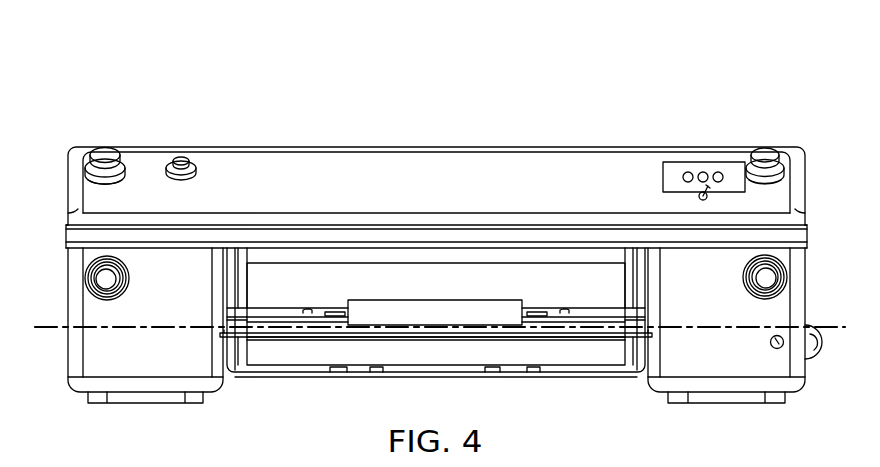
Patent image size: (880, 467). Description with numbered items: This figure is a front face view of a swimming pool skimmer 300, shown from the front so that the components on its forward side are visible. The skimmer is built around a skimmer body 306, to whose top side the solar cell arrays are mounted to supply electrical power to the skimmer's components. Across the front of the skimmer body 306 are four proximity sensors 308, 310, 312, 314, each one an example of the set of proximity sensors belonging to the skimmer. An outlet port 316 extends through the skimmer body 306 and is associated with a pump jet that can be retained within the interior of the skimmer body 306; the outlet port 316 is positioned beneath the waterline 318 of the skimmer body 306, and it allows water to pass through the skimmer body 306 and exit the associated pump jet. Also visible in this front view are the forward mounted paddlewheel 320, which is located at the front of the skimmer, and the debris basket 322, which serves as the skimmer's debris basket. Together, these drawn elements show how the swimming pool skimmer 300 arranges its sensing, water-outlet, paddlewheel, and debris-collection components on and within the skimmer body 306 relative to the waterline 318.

The swimming pool skimmer 300 is at (185, 57).
The skimmer body 306 is at (806, 192).
The proximity sensor 308 is at (104, 151).
The proximity sensor 310 is at (114, 283).
The proximity sensor 312 is at (768, 151).
The proximity sensor 314 is at (757, 284).
The outlet port 316 is at (771, 341).
The waterline 318 is at (55, 331).
The forward mounted paddlewheel 320 is at (298, 272).
The debris basket 322 is at (592, 338).